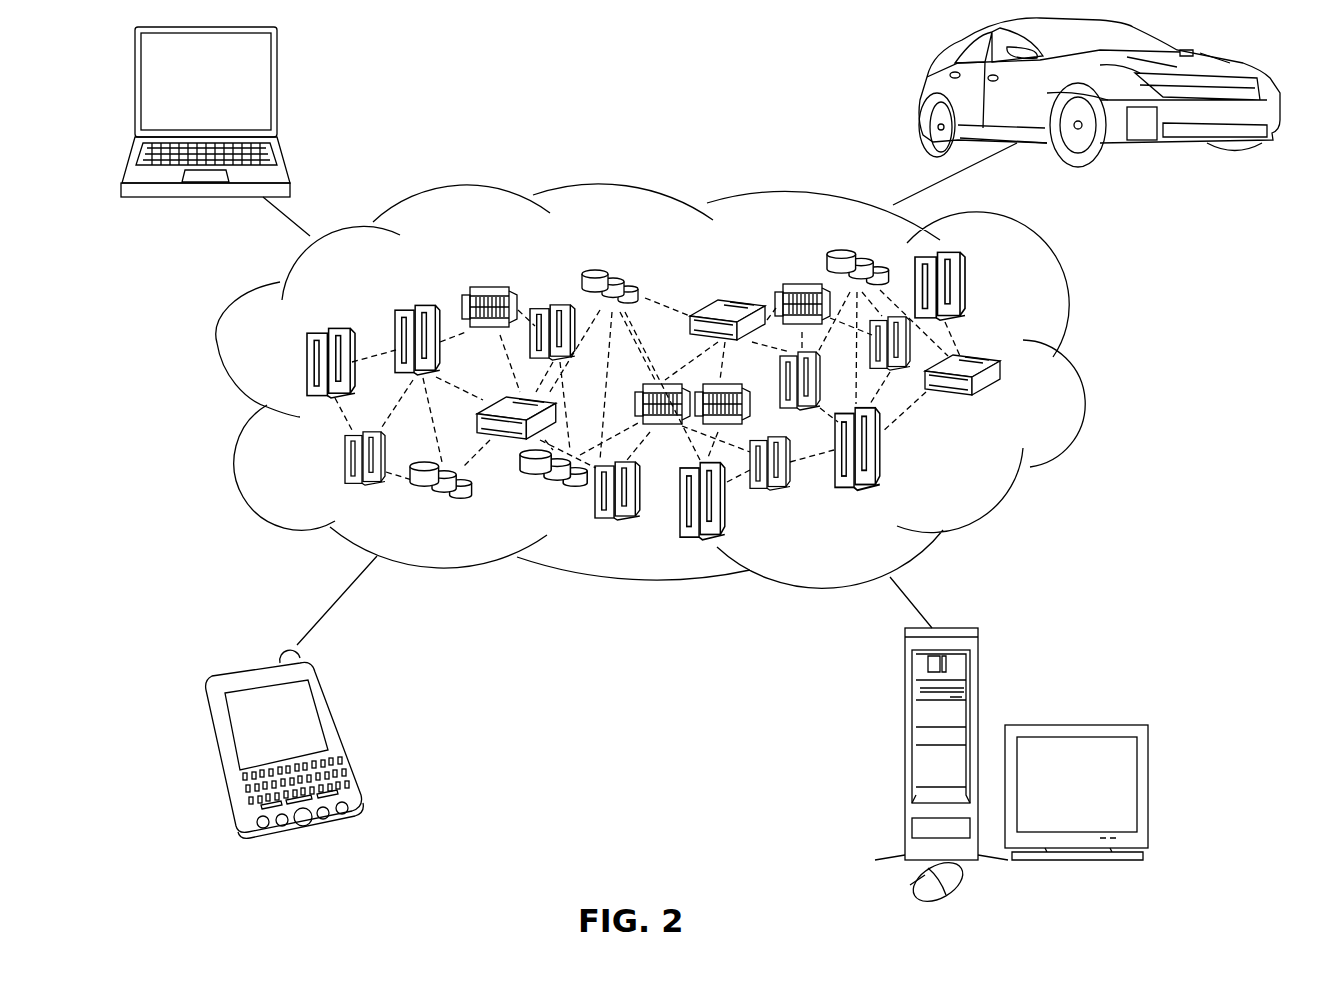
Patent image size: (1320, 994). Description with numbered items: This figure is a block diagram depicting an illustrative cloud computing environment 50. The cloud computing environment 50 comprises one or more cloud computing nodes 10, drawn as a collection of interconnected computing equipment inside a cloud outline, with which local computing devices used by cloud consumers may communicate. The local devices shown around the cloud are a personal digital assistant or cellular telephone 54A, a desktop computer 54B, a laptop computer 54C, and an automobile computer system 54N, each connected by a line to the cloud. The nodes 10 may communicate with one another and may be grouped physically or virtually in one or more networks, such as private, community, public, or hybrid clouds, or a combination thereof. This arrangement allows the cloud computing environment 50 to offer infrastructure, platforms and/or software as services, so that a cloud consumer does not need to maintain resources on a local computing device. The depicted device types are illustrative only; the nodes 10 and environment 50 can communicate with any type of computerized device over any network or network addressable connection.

The cloud computing nodes 10 is at (988, 480).
The cloud computing environment 50 is at (1080, 370).
The personal digital assistant (PDA) or cellular telephone 54A is at (333, 705).
The desktop computer 54B is at (905, 690).
The laptop computer 54C is at (277, 66).
The automobile computer system 54N is at (920, 82).